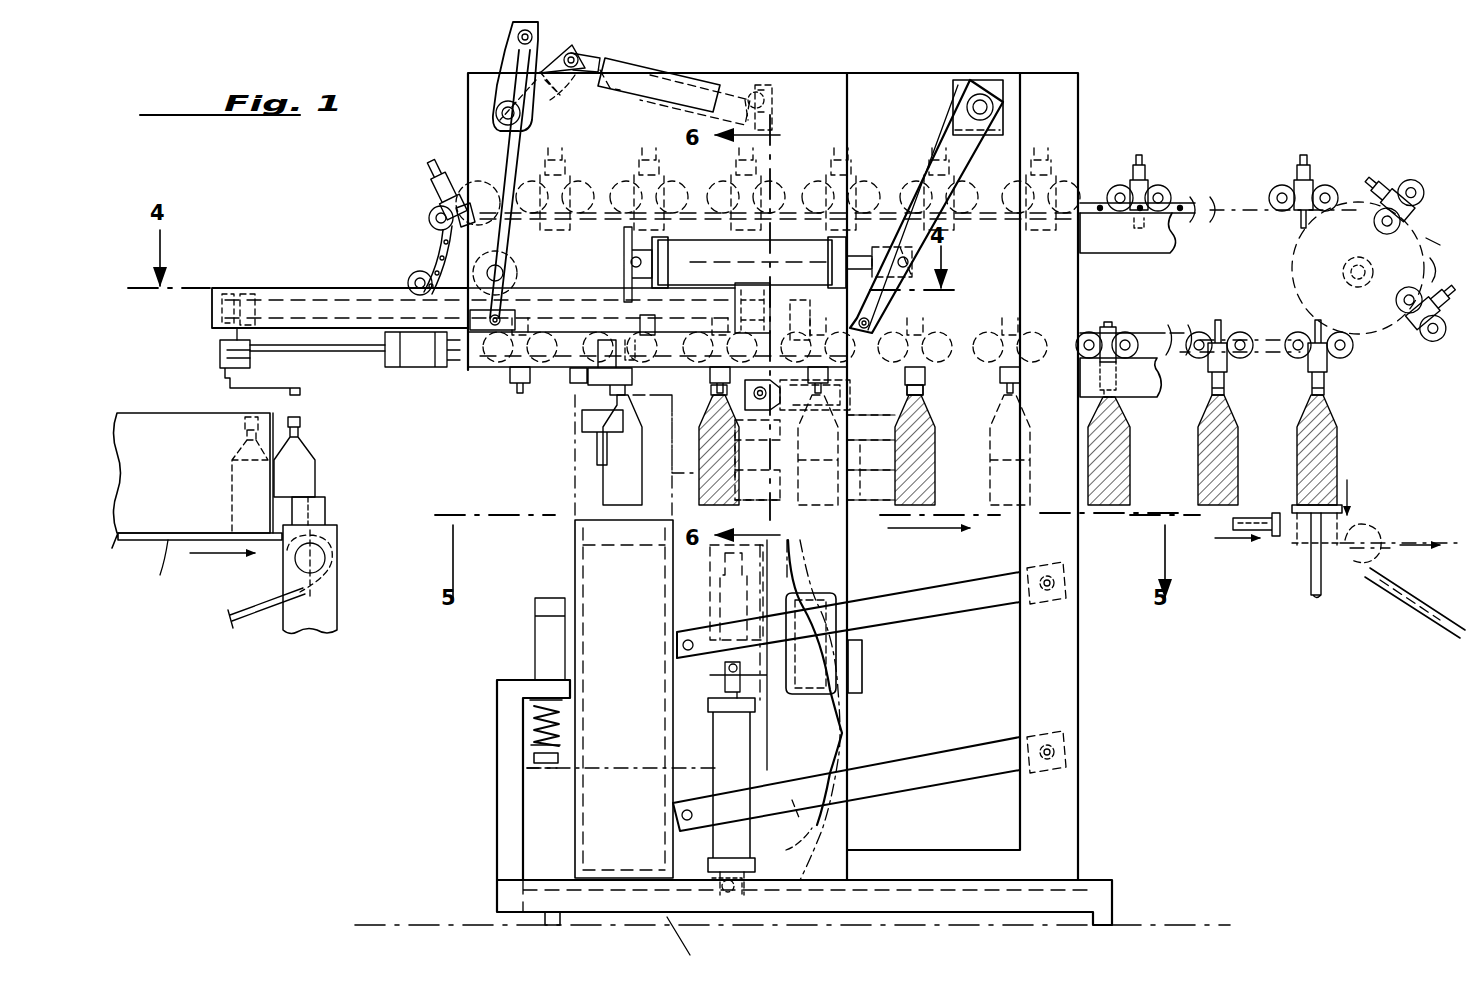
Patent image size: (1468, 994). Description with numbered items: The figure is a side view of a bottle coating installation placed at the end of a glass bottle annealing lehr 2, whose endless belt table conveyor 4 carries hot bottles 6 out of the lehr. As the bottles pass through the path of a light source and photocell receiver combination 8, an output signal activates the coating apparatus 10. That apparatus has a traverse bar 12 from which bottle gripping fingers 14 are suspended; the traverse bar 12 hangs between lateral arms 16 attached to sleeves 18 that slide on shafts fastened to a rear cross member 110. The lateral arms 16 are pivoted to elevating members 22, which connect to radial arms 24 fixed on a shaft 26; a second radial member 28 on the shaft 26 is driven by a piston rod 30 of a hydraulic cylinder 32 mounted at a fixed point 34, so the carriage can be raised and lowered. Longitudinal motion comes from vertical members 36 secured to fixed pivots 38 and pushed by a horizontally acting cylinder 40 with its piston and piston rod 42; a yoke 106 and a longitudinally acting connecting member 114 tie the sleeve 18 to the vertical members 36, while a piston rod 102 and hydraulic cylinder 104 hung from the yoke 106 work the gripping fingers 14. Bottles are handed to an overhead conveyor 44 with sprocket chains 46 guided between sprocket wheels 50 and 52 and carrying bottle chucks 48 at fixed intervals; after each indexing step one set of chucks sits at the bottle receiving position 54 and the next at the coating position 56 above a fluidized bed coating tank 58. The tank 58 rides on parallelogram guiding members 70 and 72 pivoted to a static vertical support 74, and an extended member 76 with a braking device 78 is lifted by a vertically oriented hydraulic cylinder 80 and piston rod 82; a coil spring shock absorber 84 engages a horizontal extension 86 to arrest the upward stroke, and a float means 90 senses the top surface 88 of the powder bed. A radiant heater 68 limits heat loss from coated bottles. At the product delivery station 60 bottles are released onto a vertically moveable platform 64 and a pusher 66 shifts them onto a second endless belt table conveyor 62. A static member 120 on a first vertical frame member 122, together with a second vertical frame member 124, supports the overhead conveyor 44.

The glass bottle annealing lehr 2 is at (178, 420).
The endless belt table conveyor 4 is at (197, 562).
The hot bottles 6 is at (308, 448).
The light source and photocell receiver combination 8 is at (320, 515).
The coating apparatus 10 is at (1058, 70).
The traverse bar 12 is at (255, 300).
The bottle gripping fingers 14 is at (282, 385).
The lateral arms 16 is at (335, 288).
The sleeves 18 is at (296, 290).
The elevating members 22 is at (510, 150).
The radial arms 24 is at (512, 55).
The shaft 26 is at (505, 112).
The second radial member 28 is at (553, 70).
The piston rod 30 is at (585, 55).
The hydraulic cylinder 32 is at (640, 62).
The fixed point 34 is at (760, 78).
The vertical members 36 is at (960, 150).
The fixed pivots 38 is at (985, 110).
The horizontally acting pivotally mounted cylinder 40 is at (712, 258).
The piston and piston rod 42 is at (882, 248).
The overhead conveyor 44 is at (1212, 192).
The sprocket chains 46 is at (428, 262).
The bottle chucks 48 is at (1140, 165).
The sprocket wheel 50 is at (425, 255).
The sprocket wheel 52 is at (1300, 268).
The bottle receiving position 54 is at (508, 395).
The coating position 56 is at (690, 396).
The fluidized bed coating tank 58 is at (585, 811).
The product delivery station 60 is at (1358, 370).
The second endless belt table conveyor 62 is at (1396, 640).
The vertically moveable platform 64 is at (1312, 578).
The pusher 66 is at (1250, 545).
The radiant heater 68 is at (925, 480).
The parallelogram guiding member 70 is at (946, 603).
The parallelogram guiding member 72 is at (953, 762).
The static vertical support 74 is at (1063, 710).
The extended member 76 is at (812, 742).
The braking device 78 is at (798, 605).
The vertically oriented hydraulic cylinder 80 is at (722, 735).
The piston rod 82 is at (742, 683).
The coil spring shock absorber 84 is at (538, 637).
The horizontal extension 86 is at (555, 878).
The top surface 88 is at (625, 545).
The float means 90 is at (582, 428).
The piston rod 102 is at (356, 352).
The hydraulic cylinder 104 is at (418, 352).
The yoke 106 is at (522, 300).
The rear cross member 110 is at (725, 298).
The longitudinally acting connecting member 114 is at (832, 310).
The static member 120 is at (810, 400).
The first vertical frame member 122 is at (850, 712).
The second vertical frame member 124 is at (1075, 532).